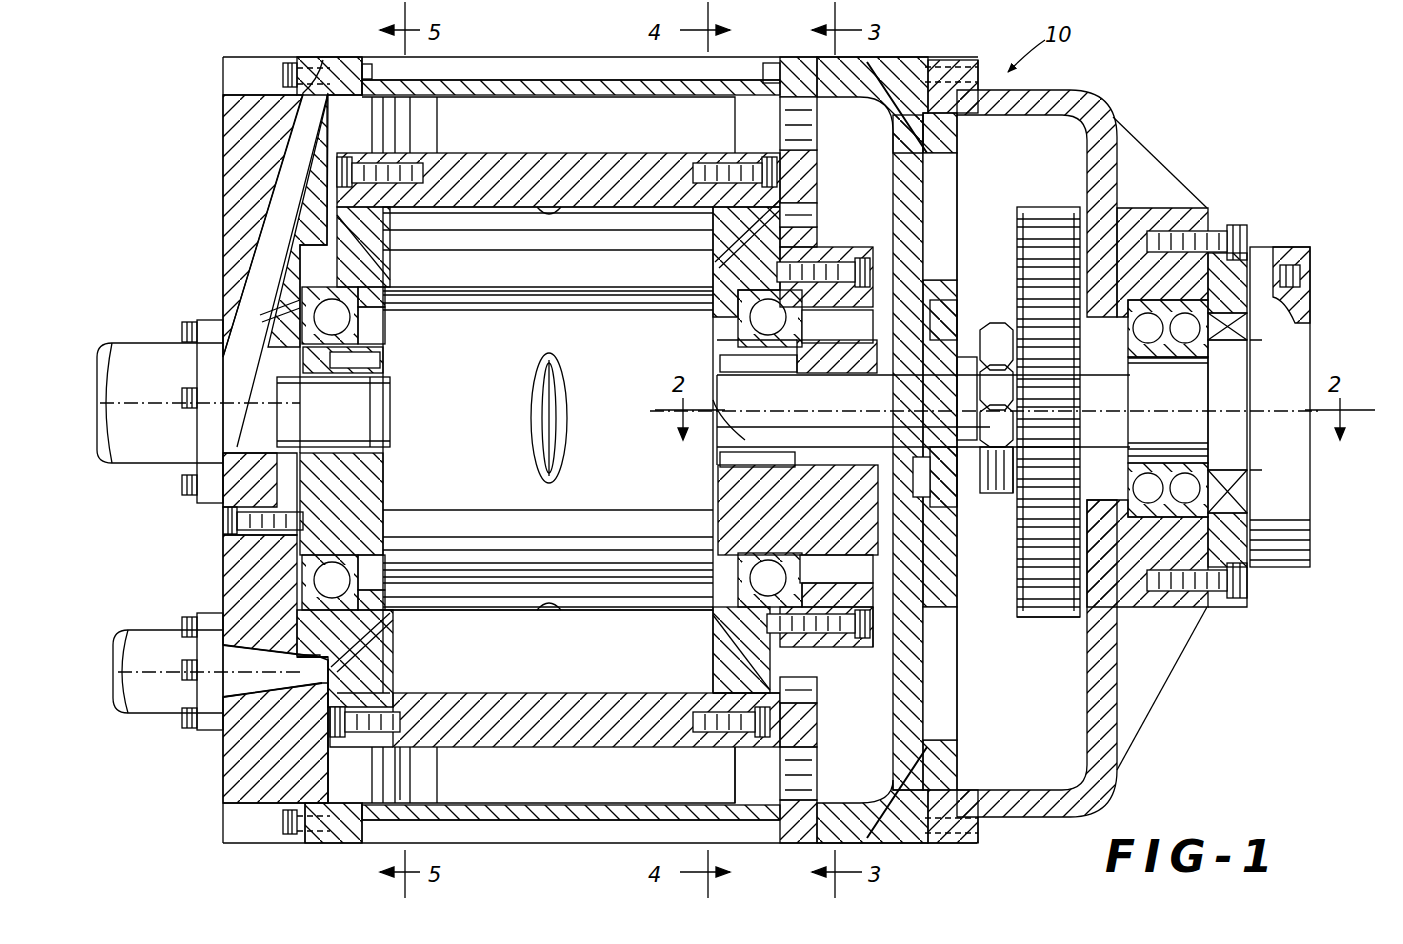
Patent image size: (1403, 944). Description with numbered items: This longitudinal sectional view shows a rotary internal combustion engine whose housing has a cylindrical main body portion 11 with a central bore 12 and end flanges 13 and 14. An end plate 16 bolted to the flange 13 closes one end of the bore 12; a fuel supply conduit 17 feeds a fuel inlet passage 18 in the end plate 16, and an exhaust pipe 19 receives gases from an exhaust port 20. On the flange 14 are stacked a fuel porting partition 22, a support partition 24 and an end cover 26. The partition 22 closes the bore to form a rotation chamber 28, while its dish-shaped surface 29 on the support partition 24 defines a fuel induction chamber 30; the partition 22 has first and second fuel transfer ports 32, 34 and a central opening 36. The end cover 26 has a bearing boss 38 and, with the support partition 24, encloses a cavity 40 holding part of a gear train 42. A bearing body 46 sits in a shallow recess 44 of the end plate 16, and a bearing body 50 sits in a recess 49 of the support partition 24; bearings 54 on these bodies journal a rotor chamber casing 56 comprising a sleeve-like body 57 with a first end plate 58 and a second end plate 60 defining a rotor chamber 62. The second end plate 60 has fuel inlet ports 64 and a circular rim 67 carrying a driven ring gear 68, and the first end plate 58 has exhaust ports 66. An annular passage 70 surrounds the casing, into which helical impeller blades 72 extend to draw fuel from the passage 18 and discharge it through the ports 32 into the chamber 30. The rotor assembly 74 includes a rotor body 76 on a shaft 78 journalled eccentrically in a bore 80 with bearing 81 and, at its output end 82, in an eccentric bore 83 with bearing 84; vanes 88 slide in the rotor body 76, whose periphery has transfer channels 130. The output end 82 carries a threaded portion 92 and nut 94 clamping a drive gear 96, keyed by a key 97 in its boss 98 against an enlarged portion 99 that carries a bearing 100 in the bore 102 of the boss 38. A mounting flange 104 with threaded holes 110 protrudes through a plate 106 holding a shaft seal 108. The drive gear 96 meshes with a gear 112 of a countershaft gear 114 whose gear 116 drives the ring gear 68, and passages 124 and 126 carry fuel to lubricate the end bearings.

The main body portion 11 is at (535, 80).
The central bore 12 is at (595, 95).
The flange 13 is at (350, 65).
The flange 14 is at (765, 62).
The end plate 16 is at (223, 142).
The fuel supply conduit 17 is at (148, 360).
The fuel inlet passage 18 is at (268, 240).
The exhaust pipe 19 is at (150, 645).
The exhaust port 20 is at (266, 679).
The fuel porting partition 22 is at (817, 178).
The support partition 24 is at (957, 170).
The end cover 26 is at (1100, 105).
The rotation chamber 28 is at (358, 786).
The dish-shaped surface 29 is at (893, 205).
The fuel induction chamber 30 is at (860, 752).
The first plurality of fuel transfer ports 32 is at (817, 135).
The second plurality of fuel transfer ports 34 is at (817, 218).
The central opening 36 is at (830, 645).
The bearing boss 38 is at (1168, 205).
The cavity 40 is at (1026, 727).
The gear train 42 is at (1035, 622).
The shallow recess 44 is at (280, 555).
The bearing body 46 is at (383, 500).
The shallow recess 49 is at (910, 345).
The bearing body 50 is at (770, 524).
The bearing 54 is at (360, 325).
The rotor chamber casing 56 is at (560, 755).
The cylindrical sleeve-like body 57 is at (568, 727).
The first end plate 58 is at (390, 672).
The second end plate 60 is at (713, 675).
The rotor chamber 62 is at (488, 660).
The fuel inlet ports 64 is at (713, 262).
The exhaust ports 66 is at (390, 270).
The circular rim 67 is at (815, 585).
The driven ring gear 68 is at (868, 648).
The annular passage 70 is at (358, 134).
The helical impeller blades 72 is at (490, 95).
The rotor assembly 74 is at (612, 622).
The rotor body 76 is at (648, 615).
The shaft 78 is at (390, 418).
The bore 80 is at (383, 355).
The bearing 81 is at (380, 365).
The output end 82 is at (876, 420).
The eccentric bore 83 is at (820, 373).
The bearing 84 is at (715, 465).
The vane 88 is at (625, 290).
The threaded portion 92 is at (985, 493).
The nut 94 is at (988, 335).
The drive gear 96 is at (1060, 205).
The key 97 is at (1130, 364).
The boss 98 is at (1130, 443).
The enlarged portion 99 is at (1186, 420).
The bearing 100 is at (1200, 350).
The bore 102 is at (1155, 508).
The mounting flange 104 is at (1280, 565).
The plate 106 is at (1230, 607).
The shaft seal 108 is at (1247, 500).
The internally threaded holes 110 is at (1310, 282).
The gear 112 is at (1013, 500).
The countershaft gear 114 is at (960, 385).
The gear 116 is at (893, 318).
The passage 124 is at (262, 315).
The passage 126 is at (277, 412).
The transfer channel 130 is at (552, 208).